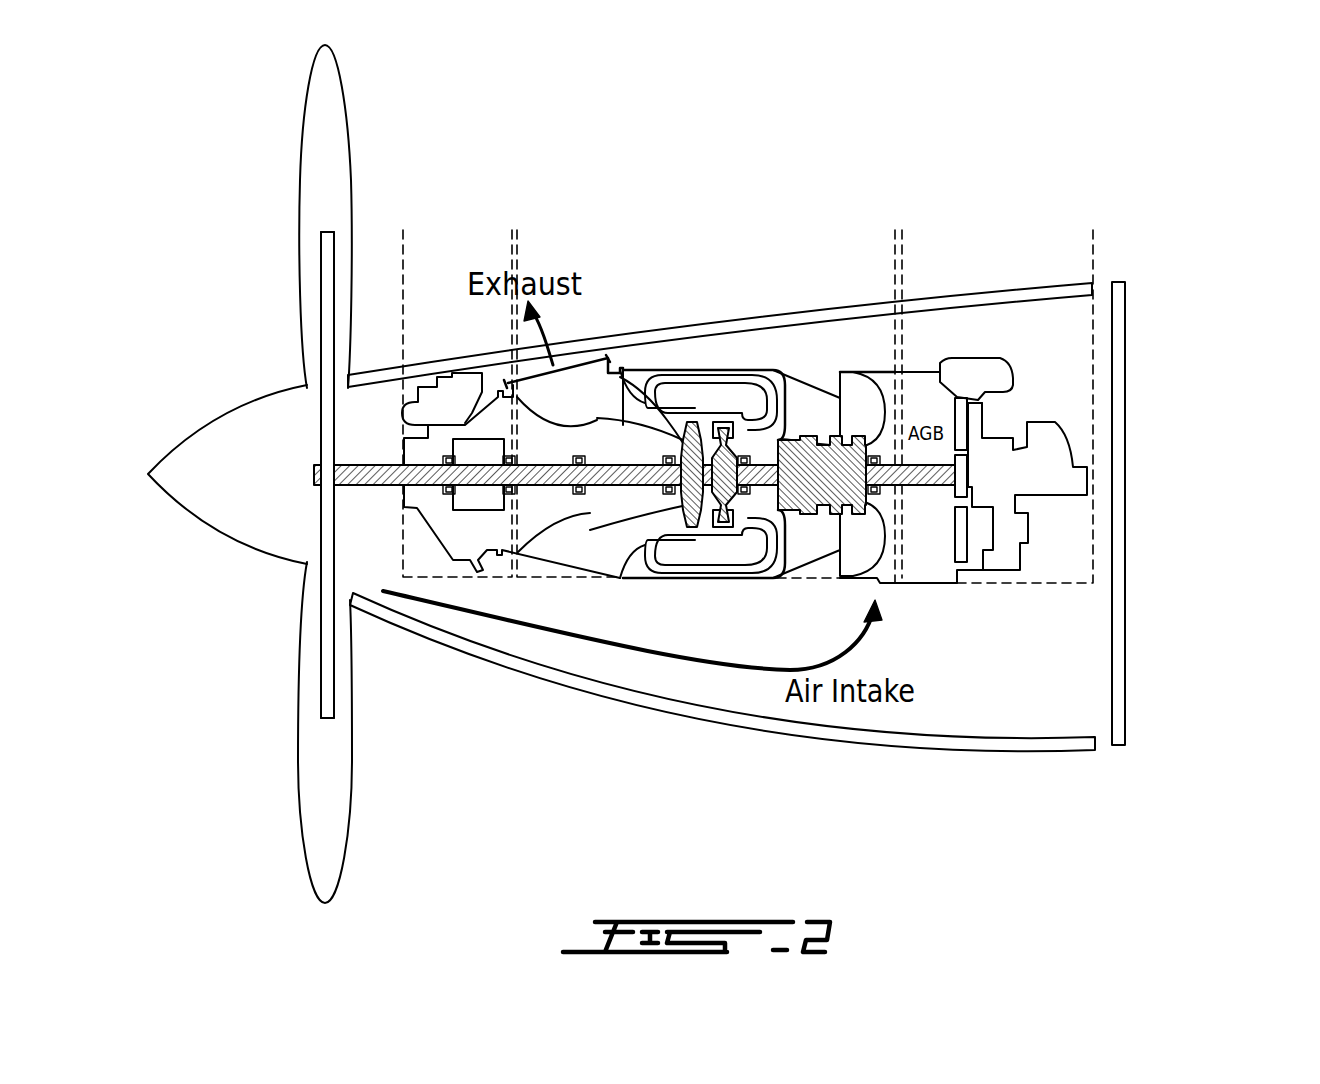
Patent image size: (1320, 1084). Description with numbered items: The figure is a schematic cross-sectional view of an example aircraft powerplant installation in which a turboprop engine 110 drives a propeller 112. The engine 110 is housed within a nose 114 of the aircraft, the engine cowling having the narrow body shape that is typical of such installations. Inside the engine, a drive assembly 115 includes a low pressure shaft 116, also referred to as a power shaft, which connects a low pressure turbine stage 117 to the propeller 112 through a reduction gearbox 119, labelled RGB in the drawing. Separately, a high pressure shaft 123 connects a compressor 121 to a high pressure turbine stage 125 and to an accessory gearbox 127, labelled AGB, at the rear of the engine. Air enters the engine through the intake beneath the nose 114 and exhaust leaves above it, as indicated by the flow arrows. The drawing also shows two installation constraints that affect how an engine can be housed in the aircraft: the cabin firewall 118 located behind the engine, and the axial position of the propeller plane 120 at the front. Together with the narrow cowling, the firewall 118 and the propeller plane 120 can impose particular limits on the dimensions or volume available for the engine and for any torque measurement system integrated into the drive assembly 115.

The turboprop engine 110 is at (776, 372).
The propeller 112 is at (312, 240).
The nose 114 is at (862, 340).
The drive assembly 115 is at (632, 440).
The low pressure shaft 116 is at (603, 465).
The low pressure turbine stage 117 is at (684, 422).
The cabin firewall 118 is at (1138, 370).
The reduction gearbox 119 is at (448, 457).
The propeller plane 120 is at (315, 448).
The compressor 121 is at (810, 482).
The high pressure shaft 123 is at (929, 485).
The high pressure turbine stage 125 is at (723, 478).
The accessory gearbox 127 is at (958, 420).